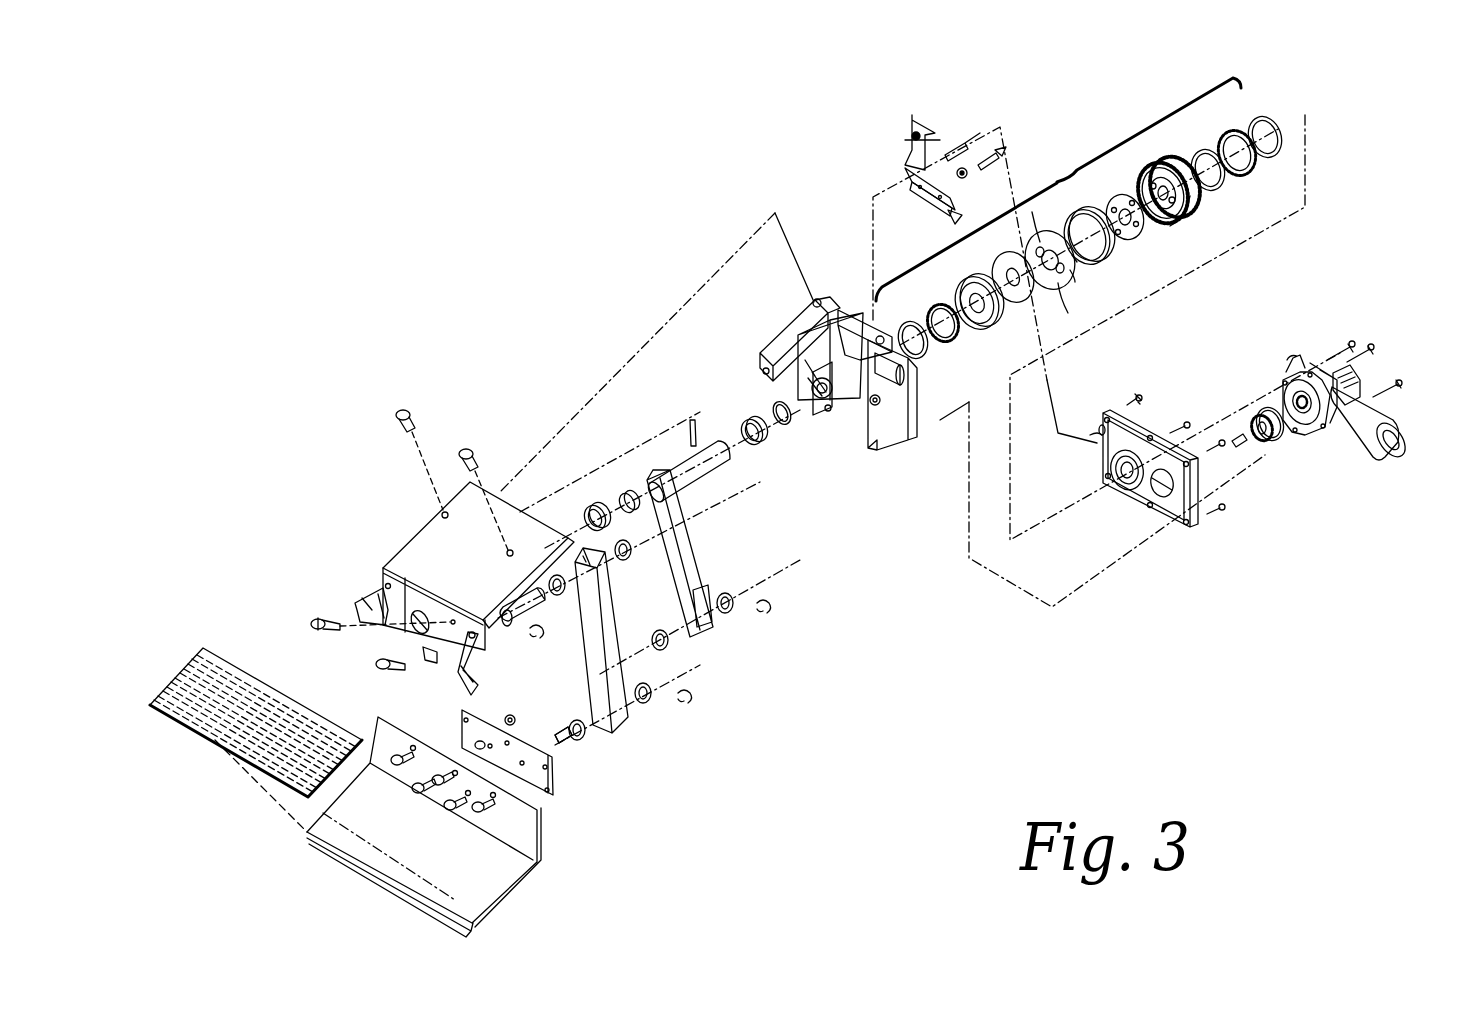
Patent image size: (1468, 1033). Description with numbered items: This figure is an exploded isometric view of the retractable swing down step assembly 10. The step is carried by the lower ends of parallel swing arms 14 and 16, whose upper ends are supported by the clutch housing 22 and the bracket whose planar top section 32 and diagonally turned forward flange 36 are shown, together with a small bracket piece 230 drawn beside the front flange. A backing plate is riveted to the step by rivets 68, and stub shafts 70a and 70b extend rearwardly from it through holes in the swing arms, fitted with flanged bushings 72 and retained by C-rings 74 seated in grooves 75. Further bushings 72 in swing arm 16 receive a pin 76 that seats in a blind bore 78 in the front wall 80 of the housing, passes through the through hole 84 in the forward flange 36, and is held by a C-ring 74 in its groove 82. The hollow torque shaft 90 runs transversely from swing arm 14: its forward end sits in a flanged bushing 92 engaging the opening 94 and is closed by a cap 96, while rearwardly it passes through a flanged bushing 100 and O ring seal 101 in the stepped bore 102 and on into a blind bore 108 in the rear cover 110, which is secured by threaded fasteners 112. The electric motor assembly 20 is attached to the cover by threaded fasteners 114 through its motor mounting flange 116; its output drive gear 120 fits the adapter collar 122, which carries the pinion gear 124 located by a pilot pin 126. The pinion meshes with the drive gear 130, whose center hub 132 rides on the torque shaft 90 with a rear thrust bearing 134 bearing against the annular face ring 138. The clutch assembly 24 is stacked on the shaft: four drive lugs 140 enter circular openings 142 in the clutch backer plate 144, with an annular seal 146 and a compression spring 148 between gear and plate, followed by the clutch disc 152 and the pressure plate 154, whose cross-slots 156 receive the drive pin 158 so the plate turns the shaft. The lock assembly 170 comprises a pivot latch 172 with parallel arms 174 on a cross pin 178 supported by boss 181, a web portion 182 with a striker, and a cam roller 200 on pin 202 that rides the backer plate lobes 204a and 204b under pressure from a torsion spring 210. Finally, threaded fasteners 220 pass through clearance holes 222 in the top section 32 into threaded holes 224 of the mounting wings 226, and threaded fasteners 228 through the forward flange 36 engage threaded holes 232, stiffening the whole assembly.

The step assembly 10 is at (423, 223).
The swing arm 14 is at (697, 560).
The swing arm 16 is at (615, 632).
The electric motor assembly 20 is at (1377, 460).
The clutch housing 22 is at (878, 450).
The clutch assembly 24 is at (1049, 149).
The planar top section 32 is at (417, 540).
The forward flange 36 is at (437, 650).
The rivets 68 is at (490, 815).
The stub shaft 70a is at (507, 712).
The stub shaft 70b is at (560, 740).
The flanged bushings 72 is at (626, 555).
The C-rings 74 is at (538, 640).
The grooves 75 is at (575, 740).
The pin 76 is at (528, 605).
The blind bore 78 is at (880, 437).
The front wall 80 is at (877, 450).
The groove 82 is at (510, 626).
The through hole 84 is at (465, 655).
The torque shaft 90 is at (680, 472).
The flanged bushing 92 is at (592, 513).
The opening 94 is at (410, 619).
The cap 96 is at (628, 500).
The flanged bushing 100 is at (755, 452).
The O ring seal 101 is at (783, 425).
The stepped bore 102 is at (812, 392).
The blind bore 108 is at (1128, 475).
The rear cover 110 is at (1192, 530).
The threaded fasteners 112 is at (1133, 398).
The threaded fasteners 114 is at (1355, 342).
The motor mounting flange 116 is at (1370, 392).
The output drive gear 120 is at (1307, 413).
The adapter collar 122 is at (1270, 440).
The pinion gear 124 is at (1267, 443).
The pilot pin 126 is at (1238, 435).
The drive gear 130 is at (1192, 197).
The center hub 132 is at (1150, 188).
The rear thrust bearing 134 is at (1235, 131).
The annular face ring 138 is at (1110, 466).
The drive lugs 140 is at (1173, 224).
The circular openings 142 is at (1048, 277).
The clutch backer plate 144 is at (1068, 273).
The annular seal 146 is at (1136, 230).
The compression spring 148 is at (1105, 247).
The clutch disc 152 is at (1018, 303).
The pressure plate 154 is at (976, 327).
The cross-slots 156 is at (965, 305).
The drive pin 158 is at (693, 442).
The lock assembly 170 is at (877, 134).
The pivot latch 172 is at (905, 180).
The arms 174 is at (905, 187).
The cross pin 178 is at (968, 135).
The boss 181 is at (1097, 430).
The web portion 182 is at (954, 218).
The cam roller 200 is at (965, 176).
The pin 202 is at (985, 160).
The lobe 204a is at (1047, 244).
The lobe 204b is at (1064, 290).
The torsion spring 210 is at (910, 133).
The threaded fasteners 220 is at (470, 450).
The clearance holes 222 is at (445, 515).
The threaded holes 224 is at (817, 301).
The mounting wings 226 is at (808, 323).
The threaded fasteners 228 is at (375, 661).
The bracket 230 is at (386, 586).
The threaded holes 232 is at (760, 370).